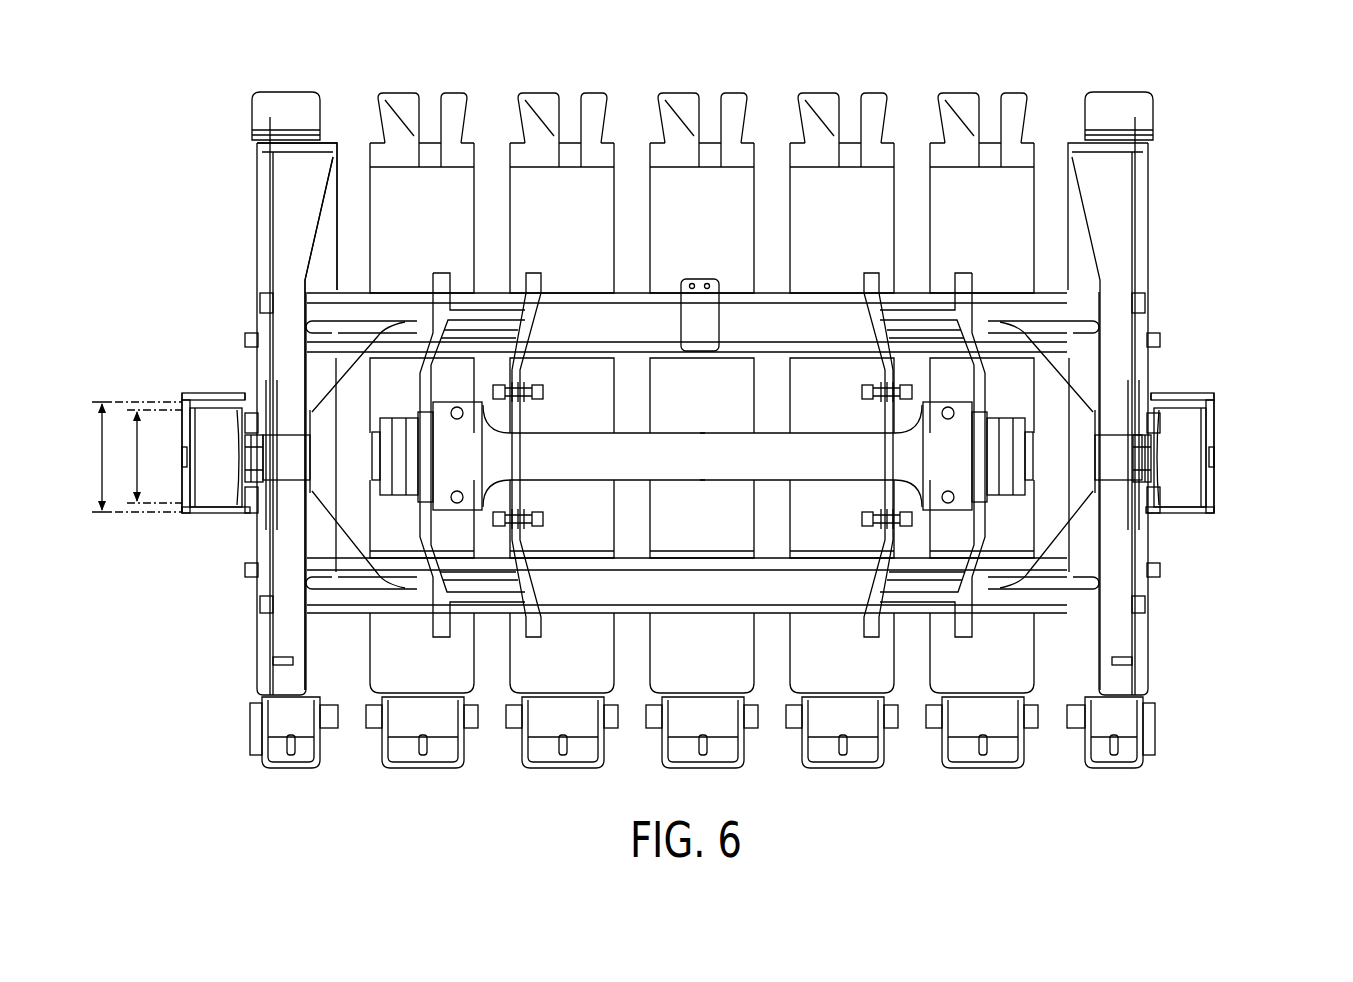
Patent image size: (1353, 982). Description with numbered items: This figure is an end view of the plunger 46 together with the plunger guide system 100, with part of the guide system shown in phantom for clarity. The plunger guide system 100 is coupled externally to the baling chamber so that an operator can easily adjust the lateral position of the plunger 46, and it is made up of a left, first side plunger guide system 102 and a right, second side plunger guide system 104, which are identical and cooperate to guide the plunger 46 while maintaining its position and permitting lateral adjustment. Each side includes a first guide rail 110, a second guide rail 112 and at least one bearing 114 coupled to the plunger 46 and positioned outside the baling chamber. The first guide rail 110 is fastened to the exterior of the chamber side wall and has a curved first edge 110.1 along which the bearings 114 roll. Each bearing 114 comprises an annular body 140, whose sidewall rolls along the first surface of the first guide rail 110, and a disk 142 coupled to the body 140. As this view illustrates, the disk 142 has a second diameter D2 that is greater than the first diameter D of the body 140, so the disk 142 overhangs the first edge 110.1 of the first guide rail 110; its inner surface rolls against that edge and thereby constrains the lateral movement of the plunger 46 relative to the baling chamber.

The plunger 46 is at (1011, 48).
The plunger guide system 100 is at (166, 331).
The first side plunger guide system 102 is at (133, 317).
The second side plunger guide system 104 is at (1310, 361).
The first guide rail 110 is at (188, 548).
The first edge 110.1 is at (188, 518).
The second guide rail 112 is at (210, 388).
The bearing 114 is at (197, 386).
The body 140 is at (223, 383).
The disk 142 is at (183, 531).
The first diameter D is at (100, 457).
The second diameter D2 is at (138, 466).